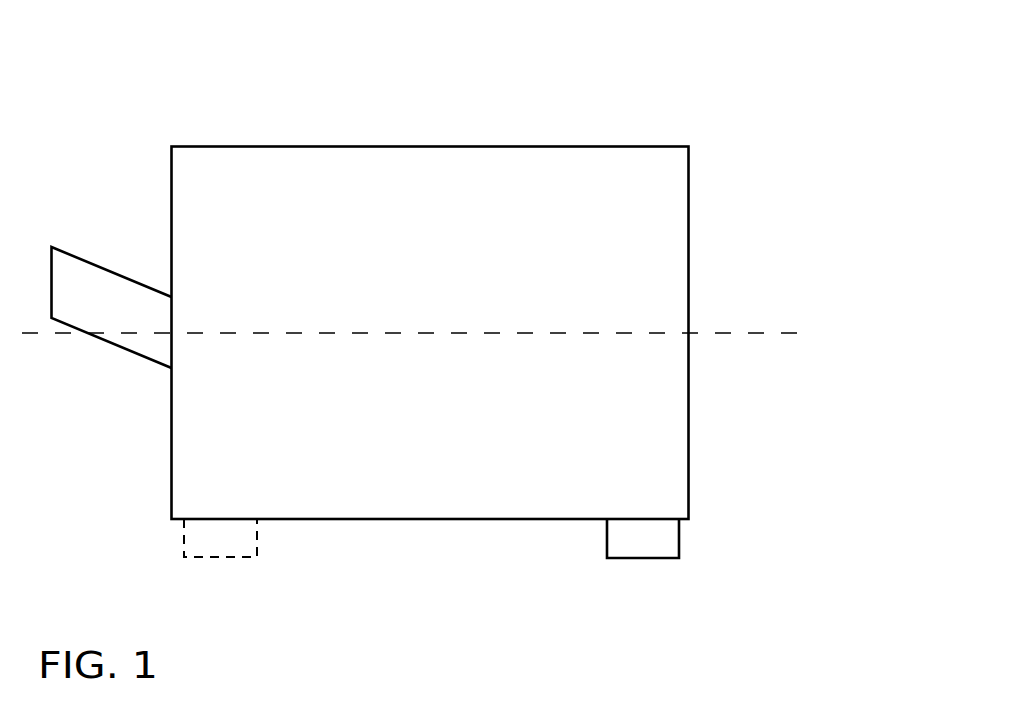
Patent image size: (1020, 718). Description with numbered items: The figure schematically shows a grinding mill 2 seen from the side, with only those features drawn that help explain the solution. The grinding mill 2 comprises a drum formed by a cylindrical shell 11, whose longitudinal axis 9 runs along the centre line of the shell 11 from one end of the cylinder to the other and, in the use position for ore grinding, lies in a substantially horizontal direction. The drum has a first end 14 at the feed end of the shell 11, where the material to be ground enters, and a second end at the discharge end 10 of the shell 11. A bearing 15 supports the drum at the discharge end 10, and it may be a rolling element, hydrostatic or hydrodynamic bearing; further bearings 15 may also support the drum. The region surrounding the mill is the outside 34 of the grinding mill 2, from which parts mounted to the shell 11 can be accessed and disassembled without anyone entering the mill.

The grinding mill 2 is at (753, 112).
The longitudinal axis 9 is at (735, 333).
The discharge end 10 is at (718, 420).
The cylindrical shell 11 is at (501, 147).
The first end 14 is at (148, 435).
The bearing 15 is at (240, 533).
The outside 34 is at (847, 423).